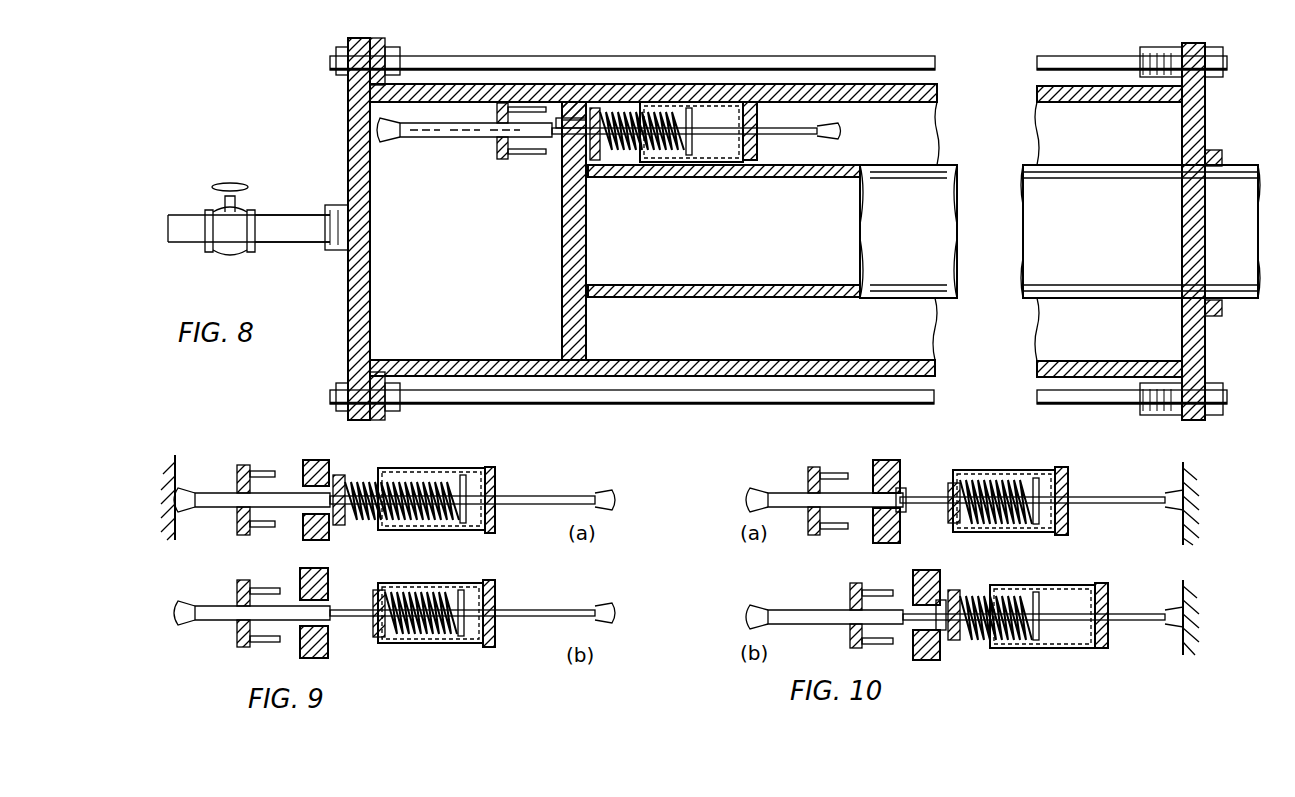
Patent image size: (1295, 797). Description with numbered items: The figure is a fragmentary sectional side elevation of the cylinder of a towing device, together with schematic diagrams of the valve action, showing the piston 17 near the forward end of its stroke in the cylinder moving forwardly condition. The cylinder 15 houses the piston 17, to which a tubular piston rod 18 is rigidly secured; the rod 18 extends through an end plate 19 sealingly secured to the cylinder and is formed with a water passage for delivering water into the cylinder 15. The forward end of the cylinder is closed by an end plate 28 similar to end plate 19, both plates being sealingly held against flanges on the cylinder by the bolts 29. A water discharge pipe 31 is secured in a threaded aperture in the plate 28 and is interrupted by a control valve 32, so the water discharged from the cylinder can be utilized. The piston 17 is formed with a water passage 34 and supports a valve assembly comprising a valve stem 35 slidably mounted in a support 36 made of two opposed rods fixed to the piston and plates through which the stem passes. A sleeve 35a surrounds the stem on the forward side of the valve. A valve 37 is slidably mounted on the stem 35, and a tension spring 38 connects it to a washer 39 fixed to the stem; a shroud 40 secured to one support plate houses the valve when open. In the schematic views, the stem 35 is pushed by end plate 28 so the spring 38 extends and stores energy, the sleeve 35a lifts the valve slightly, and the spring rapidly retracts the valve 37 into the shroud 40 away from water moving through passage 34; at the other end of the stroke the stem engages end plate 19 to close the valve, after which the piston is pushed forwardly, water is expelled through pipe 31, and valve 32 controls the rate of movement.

In FIG. 8, the cylinder 15 is at (1085, 100).
In FIG. 8, the piston 17 is at (568, 256).
In FIG. 9, the piston 17 is at (316, 462).
In FIG. 10, the piston 17 is at (915, 580).
In FIG. 8, the piston rod 18 is at (1120, 176).
In FIG. 8, the end plate 19 is at (1200, 126).
In FIG. 10, the end plate 19 is at (1190, 478).
In FIG. 8, the end plate 28 is at (352, 142).
In FIG. 9, the end plate 28 is at (178, 468).
In FIG. 8, the bolts 29 is at (1037, 62).
In FIG. 8, the water discharge pipe 31 is at (272, 222).
In FIG. 8, the control valve 32 is at (218, 183).
In FIG. 8, the water passage 34 is at (570, 160).
In FIG. 10, the water passage 34 is at (900, 490).
In FIG. 8, the valve stem 35 is at (774, 138).
In FIG. 9, the valve stem 35 is at (538, 508).
In FIG. 10, the valve stem 35 is at (1156, 506).
In FIG. 8, the sleeve 35a is at (432, 142).
In FIG. 9, the sleeve 35a is at (220, 506).
In FIG. 10, the sleeve 35a is at (790, 508).
In FIG. 8, the support 36 is at (500, 168).
In FIG. 9, the support 36 is at (503, 478).
In FIG. 10, the support 36 is at (1080, 516).
In FIG. 8, the valve 37 is at (642, 298).
In FIG. 8, the tension spring 38 is at (658, 160).
In FIG. 9, the tension spring 38 is at (390, 480).
In FIG. 10, the tension spring 38 is at (990, 528).
In FIG. 8, the washer 39 is at (704, 160).
In FIG. 9, the washer 39 is at (464, 524).
In FIG. 10, the washer 39 is at (1026, 526).
In FIG. 8, the shroud 40 is at (722, 162).
In FIG. 9, the shroud 40 is at (430, 468).
In FIG. 10, the shroud 40 is at (1050, 532).